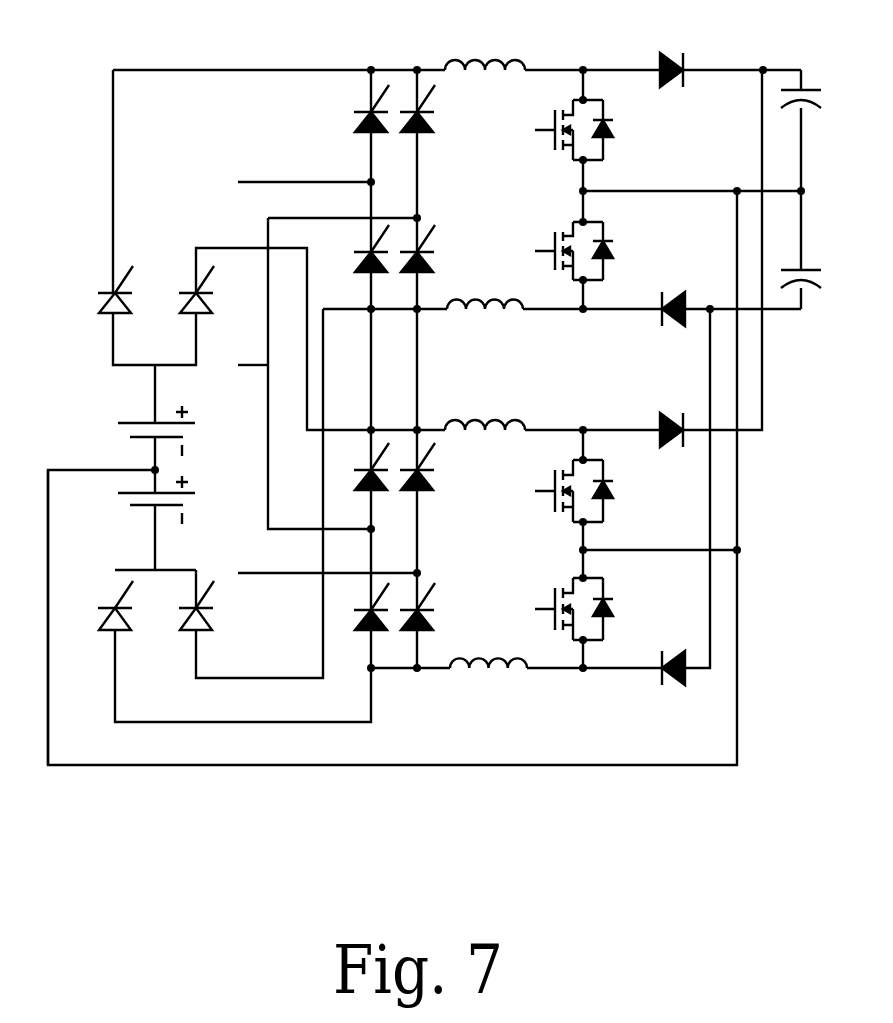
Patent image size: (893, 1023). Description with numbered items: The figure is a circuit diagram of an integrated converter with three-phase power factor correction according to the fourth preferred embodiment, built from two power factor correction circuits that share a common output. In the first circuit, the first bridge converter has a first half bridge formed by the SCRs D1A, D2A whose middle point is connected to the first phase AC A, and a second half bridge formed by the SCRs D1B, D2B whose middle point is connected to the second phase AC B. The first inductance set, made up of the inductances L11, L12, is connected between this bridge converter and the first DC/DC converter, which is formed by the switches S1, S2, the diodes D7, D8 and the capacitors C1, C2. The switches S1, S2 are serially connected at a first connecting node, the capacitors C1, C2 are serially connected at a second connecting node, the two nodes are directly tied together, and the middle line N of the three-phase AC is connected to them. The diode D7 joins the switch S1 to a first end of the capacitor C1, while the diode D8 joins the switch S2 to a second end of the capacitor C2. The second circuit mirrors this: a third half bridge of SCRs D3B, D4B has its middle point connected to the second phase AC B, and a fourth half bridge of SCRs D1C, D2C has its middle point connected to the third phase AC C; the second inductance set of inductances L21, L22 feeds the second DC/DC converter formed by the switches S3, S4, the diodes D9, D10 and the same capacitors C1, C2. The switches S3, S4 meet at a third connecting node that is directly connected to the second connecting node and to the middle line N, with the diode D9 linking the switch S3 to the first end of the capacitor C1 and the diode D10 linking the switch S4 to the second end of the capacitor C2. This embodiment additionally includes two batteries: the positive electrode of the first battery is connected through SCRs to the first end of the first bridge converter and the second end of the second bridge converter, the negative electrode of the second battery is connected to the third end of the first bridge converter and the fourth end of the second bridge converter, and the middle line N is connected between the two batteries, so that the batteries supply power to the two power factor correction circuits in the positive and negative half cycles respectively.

The first phase AC A is at (296, 162).
The second phase AC B is at (243, 340).
The third phase AC C is at (322, 549).
The middle line N is at (26, 617).
The SCR D1A is at (344, 120).
The SCR D1B is at (454, 120).
The SCR D2A is at (347, 260).
The SCR D2B is at (454, 259).
The SCR D3B is at (342, 472).
The SCR D1C is at (448, 474).
The SCR D4B is at (342, 610).
The SCR D2C is at (451, 609).
The diode D7 is at (679, 45).
The diode D8 is at (678, 283).
The diode D9 is at (680, 409).
The diode D10 is at (686, 646).
The inductance L11 is at (485, 49).
The inductance L12 is at (485, 324).
The inductance L21 is at (485, 445).
The inductance L22 is at (488, 681).
The switch S1 is at (595, 130).
The switch S2 is at (595, 251).
The switch S3 is at (596, 491).
The switch S4 is at (596, 609).
The capacitor C1 is at (824, 130).
The capacitor C2 is at (824, 250).